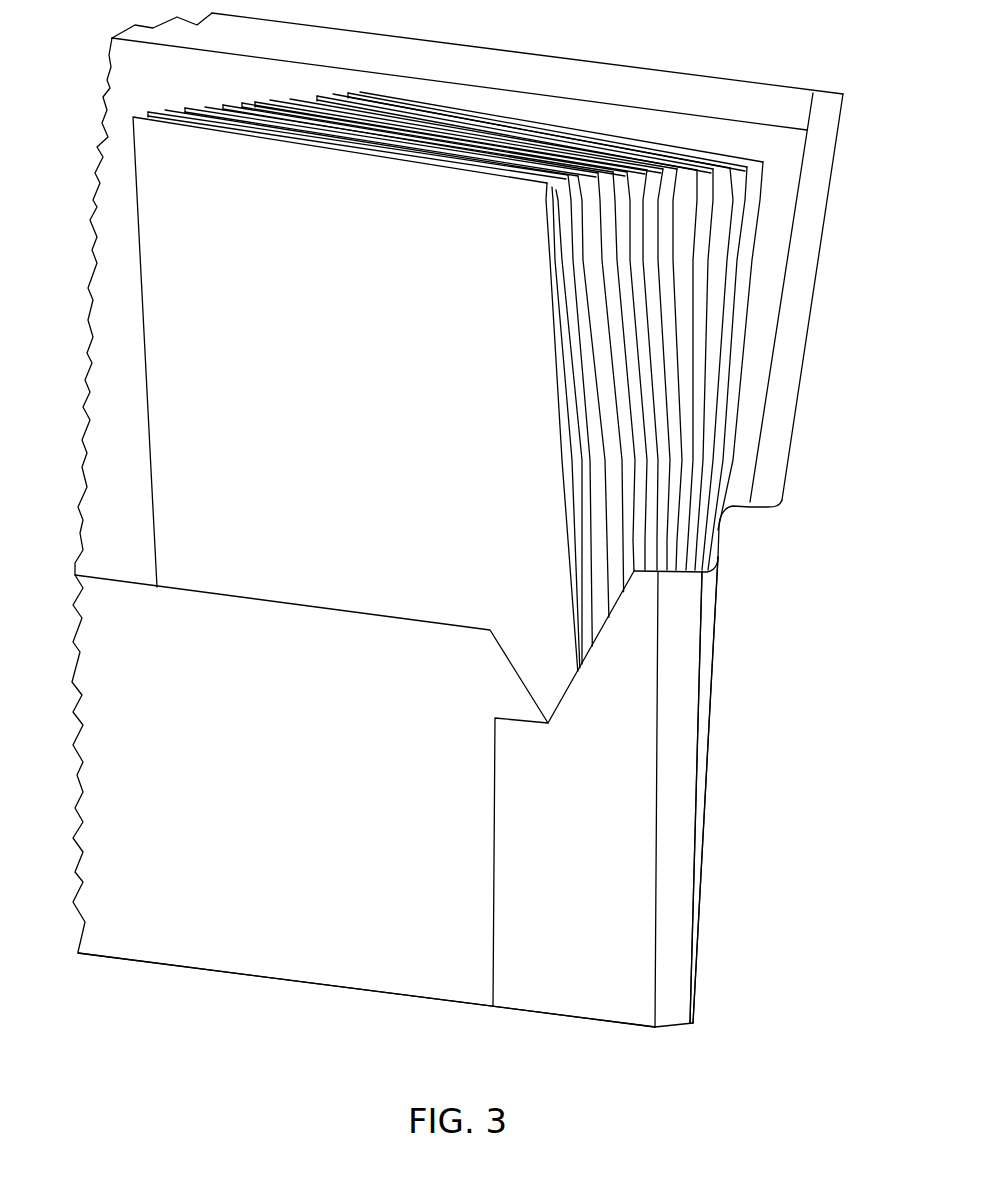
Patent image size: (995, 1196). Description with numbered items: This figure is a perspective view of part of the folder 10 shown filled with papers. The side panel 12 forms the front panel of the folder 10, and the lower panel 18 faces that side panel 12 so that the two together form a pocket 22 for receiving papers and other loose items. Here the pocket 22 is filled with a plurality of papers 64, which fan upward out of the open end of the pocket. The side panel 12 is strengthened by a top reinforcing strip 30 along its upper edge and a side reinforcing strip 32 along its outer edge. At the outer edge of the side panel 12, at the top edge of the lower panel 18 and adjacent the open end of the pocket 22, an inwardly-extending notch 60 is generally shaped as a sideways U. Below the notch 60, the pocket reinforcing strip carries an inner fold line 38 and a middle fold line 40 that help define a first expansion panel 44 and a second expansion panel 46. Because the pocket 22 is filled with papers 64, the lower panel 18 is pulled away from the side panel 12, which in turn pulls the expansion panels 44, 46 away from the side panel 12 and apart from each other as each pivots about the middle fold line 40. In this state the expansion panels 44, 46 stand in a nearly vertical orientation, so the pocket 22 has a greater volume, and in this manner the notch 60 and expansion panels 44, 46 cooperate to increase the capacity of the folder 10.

The folder 10 is at (587, 1013).
The side panel 12 is at (118, 72).
The lower panel 18 is at (233, 967).
The pocket 22 is at (622, 515).
The top reinforcing strip 30 is at (743, 96).
The side reinforcing strip 32 is at (775, 458).
The inner fold line 38 is at (655, 923).
The middle fold line 40 is at (698, 733).
The first expansion panel 44 is at (687, 672).
The second expansion panel 46 is at (712, 612).
The notch 60 is at (742, 524).
The papers 64 is at (592, 134).